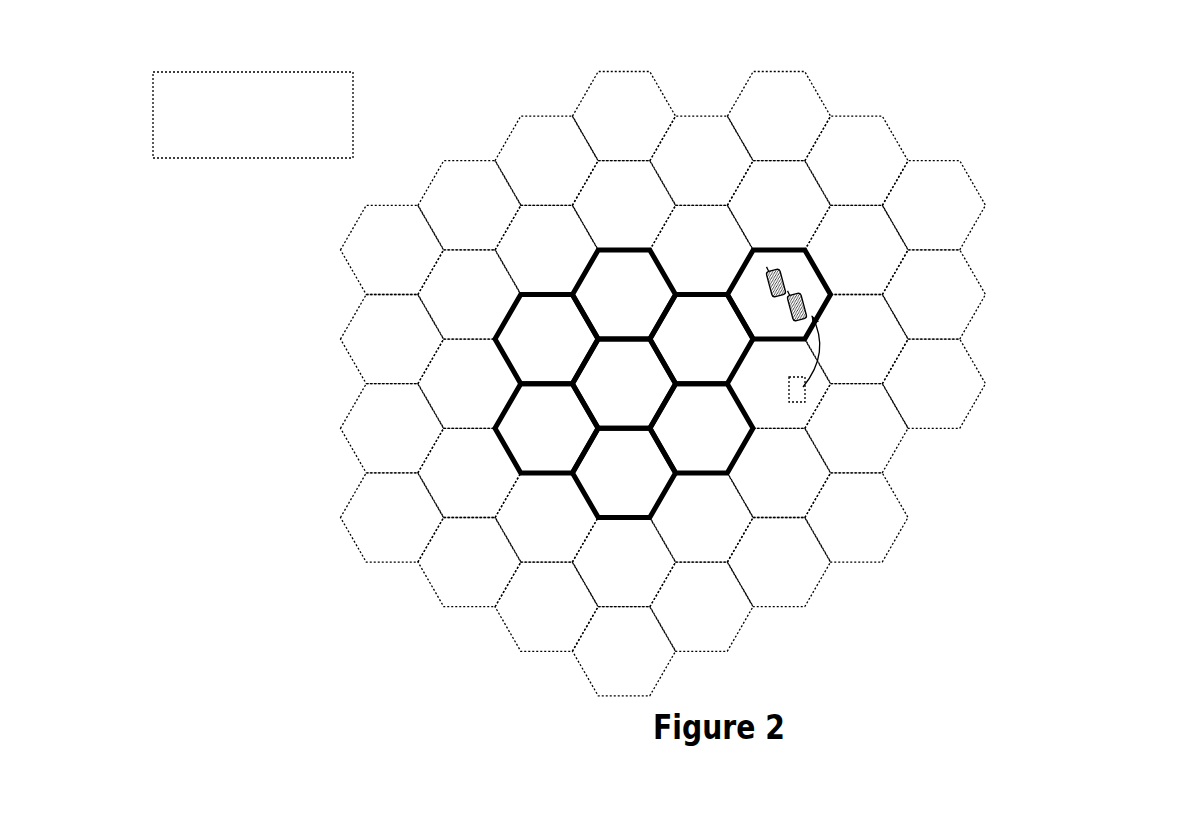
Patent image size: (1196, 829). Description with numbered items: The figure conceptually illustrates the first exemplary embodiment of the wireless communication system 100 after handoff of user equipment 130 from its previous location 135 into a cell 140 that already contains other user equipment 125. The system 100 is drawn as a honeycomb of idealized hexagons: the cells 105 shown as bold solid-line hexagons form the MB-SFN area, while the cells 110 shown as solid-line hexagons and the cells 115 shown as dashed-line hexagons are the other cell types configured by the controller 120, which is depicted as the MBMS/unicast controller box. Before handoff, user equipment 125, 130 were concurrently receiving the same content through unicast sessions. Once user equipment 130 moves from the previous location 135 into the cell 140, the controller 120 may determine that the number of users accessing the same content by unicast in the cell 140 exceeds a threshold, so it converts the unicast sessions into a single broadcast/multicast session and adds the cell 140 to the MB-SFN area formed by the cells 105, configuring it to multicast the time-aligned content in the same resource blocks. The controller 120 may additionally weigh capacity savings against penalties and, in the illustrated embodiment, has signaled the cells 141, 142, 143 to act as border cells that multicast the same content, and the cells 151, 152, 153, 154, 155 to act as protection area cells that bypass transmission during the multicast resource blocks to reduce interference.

The wireless communication system 100 is at (1090, 91).
The cells indicated by bold solid-line hexagons 105 is at (550, 295).
The cells indicated by solid-line hexagons 110 is at (463, 432).
The cells indicated by dashed line hexagons 115 is at (388, 565).
The controller 120 is at (239, 148).
The user equipment 125 is at (777, 268).
The user equipment 130 is at (808, 305).
The previous location 135 is at (800, 401).
The cell 140 is at (737, 272).
The border cell 141 is at (754, 199).
The border cell 142 is at (843, 236).
The border cell 143 is at (838, 371).
The protection area cell 151 is at (762, 106).
The protection area cell 152 is at (843, 187).
The protection area cell 153 is at (924, 197).
The protection area cell 154 is at (924, 281).
The protection area cell 155 is at (924, 371).